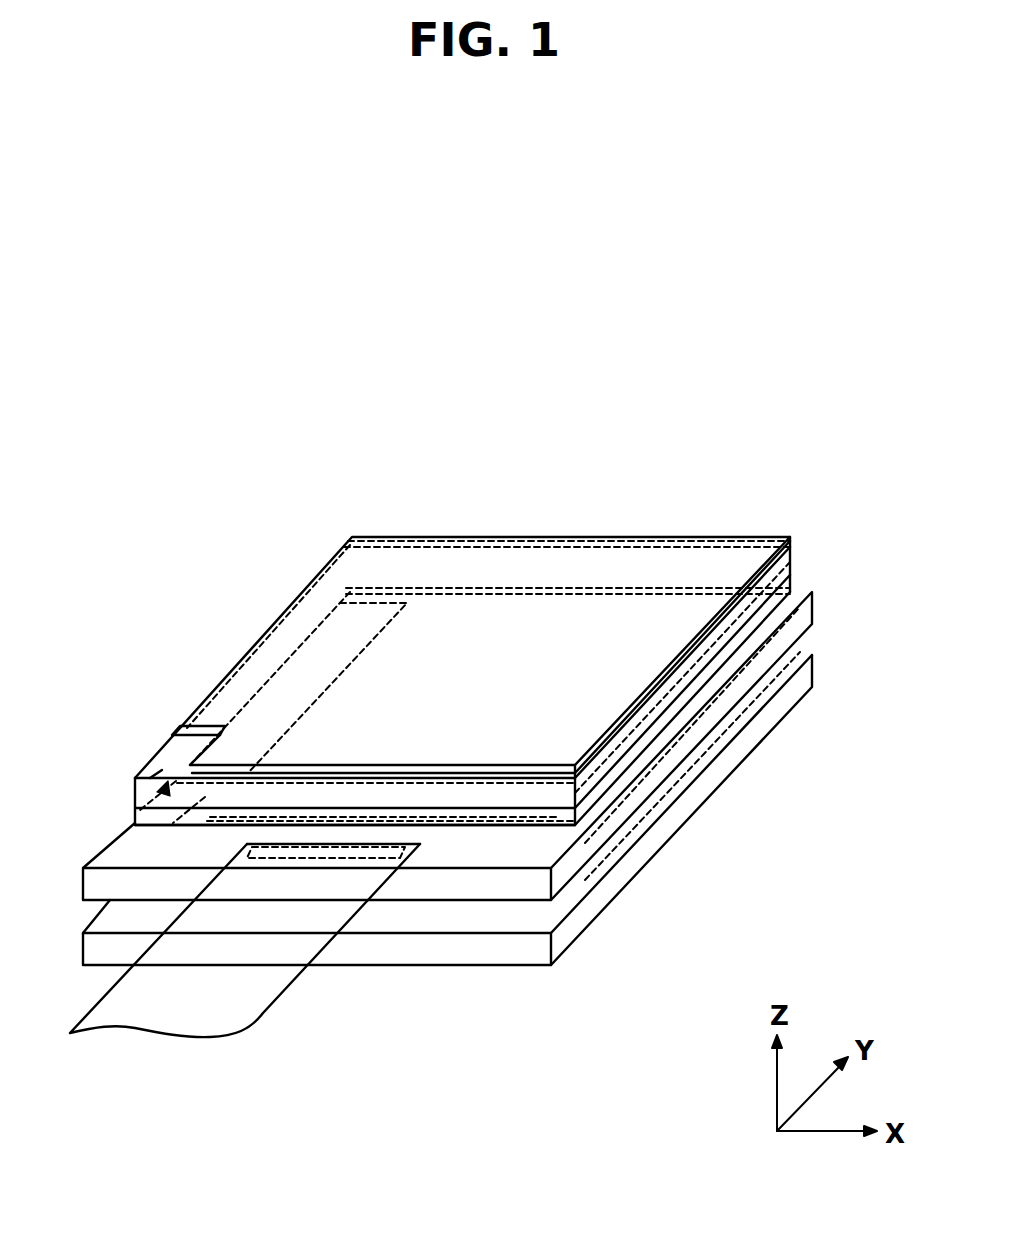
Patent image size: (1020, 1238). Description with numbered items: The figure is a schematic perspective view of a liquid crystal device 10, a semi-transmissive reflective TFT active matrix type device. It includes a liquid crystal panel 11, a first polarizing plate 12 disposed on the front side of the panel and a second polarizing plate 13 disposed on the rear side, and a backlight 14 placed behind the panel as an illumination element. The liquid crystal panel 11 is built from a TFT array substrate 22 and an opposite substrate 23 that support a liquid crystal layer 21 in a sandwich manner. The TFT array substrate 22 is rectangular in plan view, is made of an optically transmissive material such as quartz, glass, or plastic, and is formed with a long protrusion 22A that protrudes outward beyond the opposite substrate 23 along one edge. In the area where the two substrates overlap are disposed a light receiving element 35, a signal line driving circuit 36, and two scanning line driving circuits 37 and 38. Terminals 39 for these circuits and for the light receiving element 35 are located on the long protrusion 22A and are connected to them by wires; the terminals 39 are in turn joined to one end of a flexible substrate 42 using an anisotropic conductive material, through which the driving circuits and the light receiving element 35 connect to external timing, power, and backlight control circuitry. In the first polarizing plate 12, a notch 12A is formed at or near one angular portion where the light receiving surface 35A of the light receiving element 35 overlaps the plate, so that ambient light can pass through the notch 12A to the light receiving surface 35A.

The liquid crystal device 10 is at (797, 472).
The liquid crystal panel 11 is at (893, 520).
The first polarizing plate 12 is at (790, 537).
The notch 12A is at (184, 723).
The second polarizing plate 13 is at (790, 647).
The backlight 14 is at (800, 677).
The liquid crystal layer 21 is at (790, 575).
The TFT array substrate 22 is at (800, 618).
The long protrusion 22A is at (494, 845).
The opposite substrate 23 is at (790, 556).
The light receiving element 35 is at (147, 773).
The light receiving surface 35A is at (167, 778).
The signal line driving circuit 36 is at (455, 800).
The scanning line driving circuit 37 is at (293, 690).
The scanning line driving circuit 38 is at (668, 693).
The terminals 39 is at (340, 852).
The flexible substrate 42 is at (245, 1006).